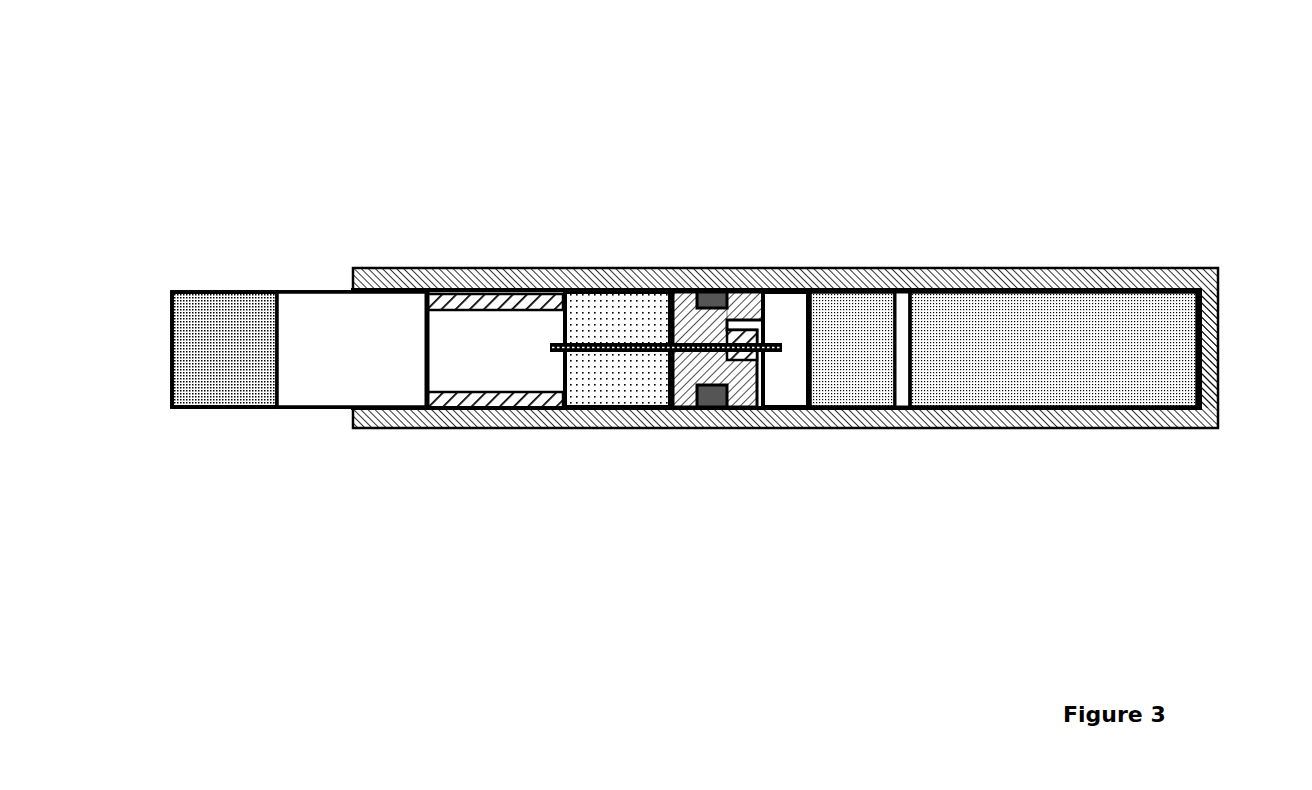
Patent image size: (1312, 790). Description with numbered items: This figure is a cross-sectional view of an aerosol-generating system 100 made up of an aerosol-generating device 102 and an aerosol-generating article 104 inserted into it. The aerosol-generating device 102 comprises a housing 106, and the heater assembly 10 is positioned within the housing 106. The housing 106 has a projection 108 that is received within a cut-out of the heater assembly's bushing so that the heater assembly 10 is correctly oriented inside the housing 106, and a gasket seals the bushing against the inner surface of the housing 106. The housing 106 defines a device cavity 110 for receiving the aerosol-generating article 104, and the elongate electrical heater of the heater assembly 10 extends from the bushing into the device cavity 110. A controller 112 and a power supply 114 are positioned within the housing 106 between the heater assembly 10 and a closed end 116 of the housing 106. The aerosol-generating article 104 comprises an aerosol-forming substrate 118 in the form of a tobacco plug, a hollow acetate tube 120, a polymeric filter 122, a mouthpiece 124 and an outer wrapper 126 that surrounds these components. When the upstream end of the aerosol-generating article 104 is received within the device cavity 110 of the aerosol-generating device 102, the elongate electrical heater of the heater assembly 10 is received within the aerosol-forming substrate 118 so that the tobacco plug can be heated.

The aerosol-generating system 100 is at (1067, 170).
The aerosol-generating device 102 is at (885, 264).
The aerosol-generating article 104 is at (309, 286).
The housing 106 is at (907, 410).
The projection 108 is at (745, 300).
The device cavity 110 is at (620, 290).
The controller 112 is at (852, 349).
The power supply 114 is at (1053, 349).
The closed end 116 is at (1218, 348).
The aerosol-forming substrate 118 is at (617, 382).
The hollow acetate tube 120 is at (502, 395).
The polymeric filter 122 is at (335, 388).
The mouthpiece 124 is at (213, 315).
The outer wrapper 126 is at (232, 407).
The heater assembly 10 is at (690, 326).